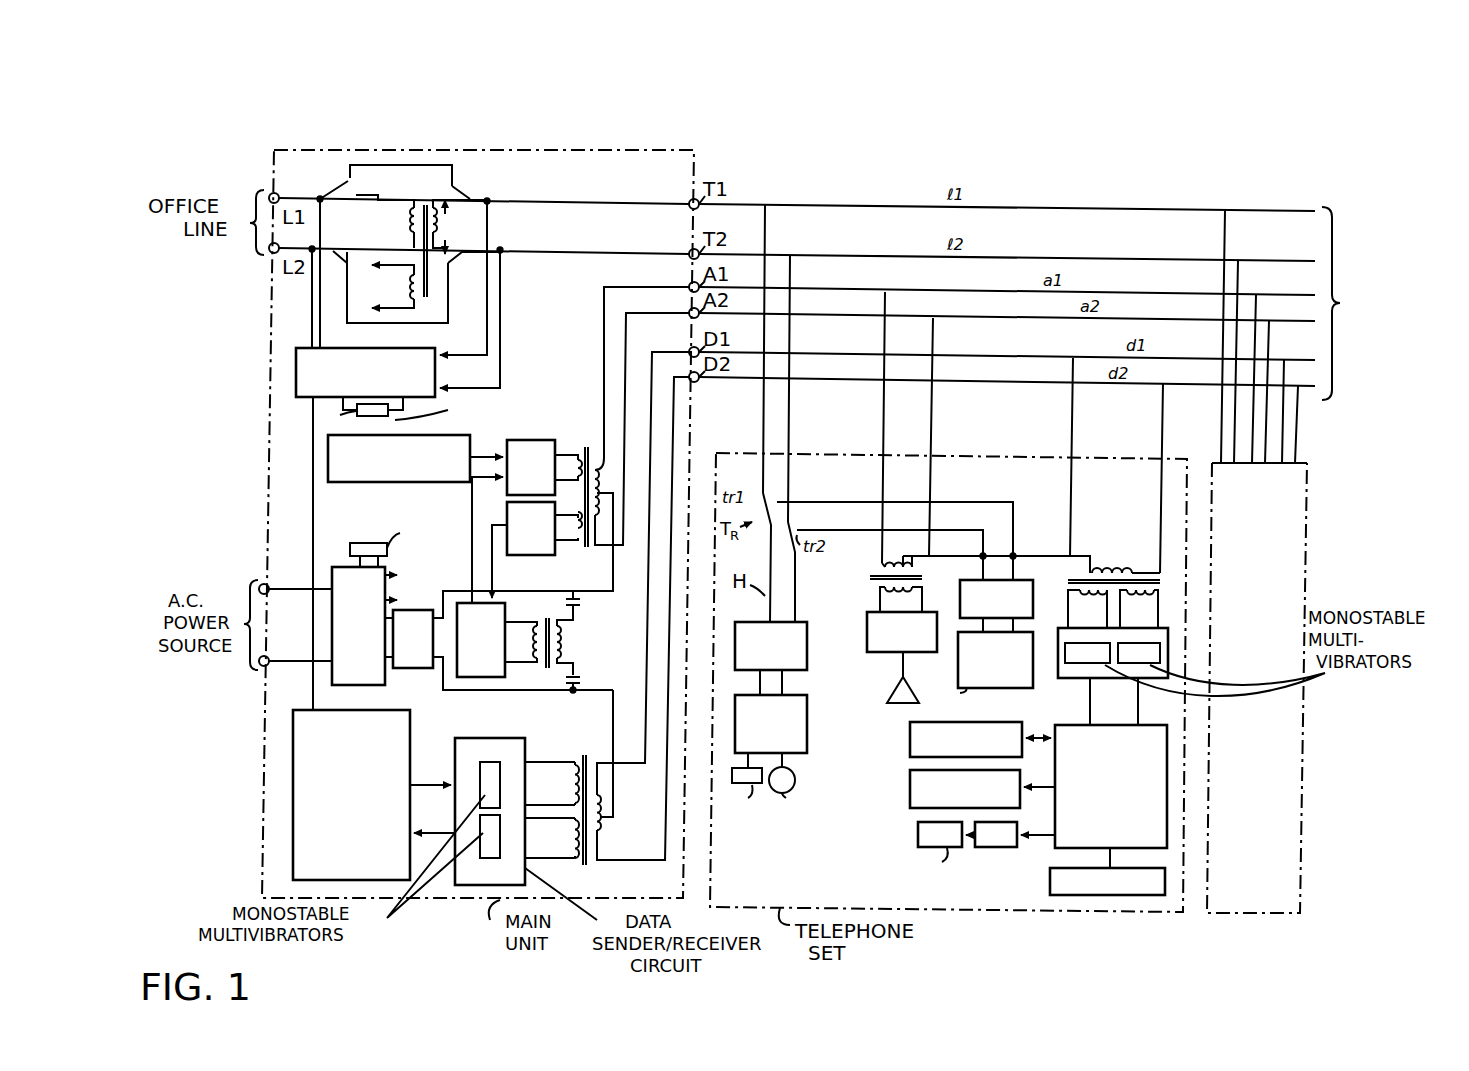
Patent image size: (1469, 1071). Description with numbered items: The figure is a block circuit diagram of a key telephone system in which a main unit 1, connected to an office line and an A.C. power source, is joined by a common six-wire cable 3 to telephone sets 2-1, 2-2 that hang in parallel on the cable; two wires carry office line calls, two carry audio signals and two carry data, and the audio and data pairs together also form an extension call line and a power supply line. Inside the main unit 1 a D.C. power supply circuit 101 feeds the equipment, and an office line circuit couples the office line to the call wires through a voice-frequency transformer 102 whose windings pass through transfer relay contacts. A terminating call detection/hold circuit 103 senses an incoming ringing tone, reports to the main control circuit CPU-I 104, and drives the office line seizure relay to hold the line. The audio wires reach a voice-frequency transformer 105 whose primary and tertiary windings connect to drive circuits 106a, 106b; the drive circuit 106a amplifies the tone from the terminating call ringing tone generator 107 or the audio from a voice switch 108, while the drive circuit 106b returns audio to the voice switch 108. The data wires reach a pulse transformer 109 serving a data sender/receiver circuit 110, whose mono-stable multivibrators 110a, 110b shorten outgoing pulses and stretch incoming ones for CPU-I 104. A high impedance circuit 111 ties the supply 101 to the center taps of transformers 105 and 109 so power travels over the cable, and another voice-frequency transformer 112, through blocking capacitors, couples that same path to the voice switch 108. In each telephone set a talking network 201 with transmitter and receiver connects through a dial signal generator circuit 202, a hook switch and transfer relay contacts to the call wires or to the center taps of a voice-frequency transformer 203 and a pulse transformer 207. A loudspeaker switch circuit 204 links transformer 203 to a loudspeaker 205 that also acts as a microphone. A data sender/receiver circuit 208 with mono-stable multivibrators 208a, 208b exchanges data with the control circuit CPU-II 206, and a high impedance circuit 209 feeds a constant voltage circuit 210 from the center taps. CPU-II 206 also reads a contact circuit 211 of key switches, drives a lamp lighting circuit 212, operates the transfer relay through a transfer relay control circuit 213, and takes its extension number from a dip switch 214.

The main unit 1 is at (470, 900).
The key telephone set 2-1 is at (1045, 912).
The key telephone set 2-2 is at (1288, 918).
The 6-wire cable 3 is at (1070, 333).
The D.C. power supply circuit 101 is at (340, 567).
The voice-frequency transformer 102 is at (398, 244).
The terminating call detection/hold circuit 103 is at (425, 348).
The main control circuit (CPU-I) 104 is at (412, 732).
The voice-frequency transformer 105 is at (583, 452).
The drive circuit 106a is at (540, 440).
The drive circuit 106b is at (555, 557).
The terminating call ringing tone generator 107 is at (402, 484).
The voice switch 108 is at (506, 620).
The pulse transformer 109 is at (586, 757).
The data sender/receiver circuit 110 is at (515, 798).
The mono-stable multivibrator 110a is at (480, 772).
The mono-stable multivibrator 110b is at (480, 852).
The high impedance circuit 111 is at (433, 680).
The voice-frequency transformer 112 is at (550, 668).
The talking network 201 is at (808, 730).
The dial signal generator circuit 202 is at (807, 646).
The voice-frequency transformer 203 is at (870, 578).
The loudspeaker switch circuit 204 is at (867, 640).
The loudspeaker 205 is at (893, 694).
The control circuit (CPU-II) 206 is at (1085, 818).
The pulse transformer 207 is at (1060, 582).
The data sender/receiver circuit 208 is at (1141, 671).
The mono-stable multivibrator 208a is at (1087, 653).
The mono-stable multivibrator 208b is at (1139, 653).
The high impedance circuit 209 is at (962, 584).
The constant voltage circuit 210 is at (943, 701).
The contact circuit 211 is at (910, 732).
The lamp lighting circuit 212 is at (910, 784).
The transfer relay control circuit 213 is at (988, 848).
The dip switch 214 is at (1050, 880).